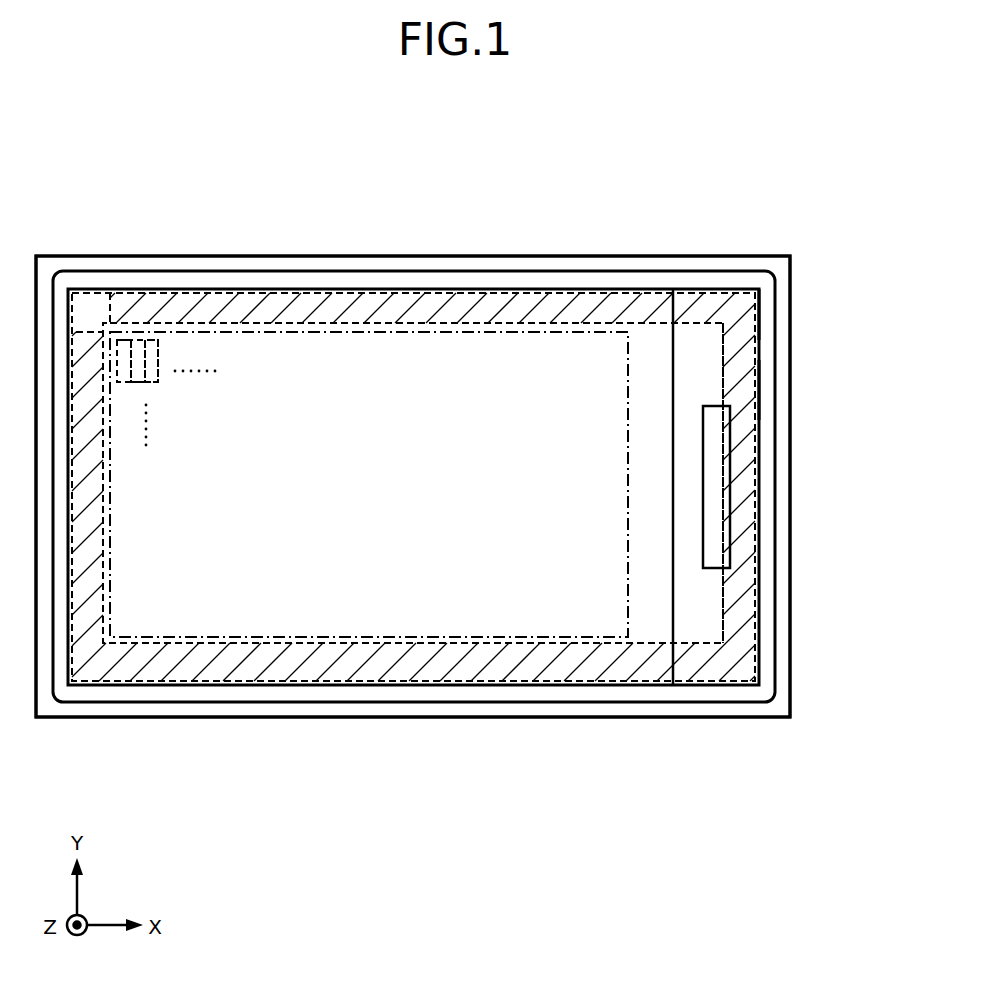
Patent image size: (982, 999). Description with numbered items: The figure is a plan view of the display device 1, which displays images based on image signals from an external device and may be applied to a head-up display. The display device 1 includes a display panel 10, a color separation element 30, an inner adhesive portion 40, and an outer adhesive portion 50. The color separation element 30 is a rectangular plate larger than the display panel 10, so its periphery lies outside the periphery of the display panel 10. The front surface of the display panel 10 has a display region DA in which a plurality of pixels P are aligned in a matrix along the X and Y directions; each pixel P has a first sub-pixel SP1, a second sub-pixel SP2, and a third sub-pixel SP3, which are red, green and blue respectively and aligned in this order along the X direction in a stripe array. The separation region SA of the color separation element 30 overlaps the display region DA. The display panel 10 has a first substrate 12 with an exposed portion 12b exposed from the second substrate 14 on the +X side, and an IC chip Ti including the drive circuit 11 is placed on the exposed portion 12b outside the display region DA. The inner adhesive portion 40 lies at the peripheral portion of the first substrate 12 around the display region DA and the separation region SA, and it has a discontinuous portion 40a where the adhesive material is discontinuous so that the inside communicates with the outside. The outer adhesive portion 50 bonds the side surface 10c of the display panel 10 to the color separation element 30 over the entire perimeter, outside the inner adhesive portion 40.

The display device 1 is at (622, 153).
The display panel 10 is at (507, 281).
The side surface of the display panel 10c is at (760, 385).
The drive circuit 11 is at (806, 487).
The IC chip Ti is at (732, 490).
The first substrate 12 is at (774, 303).
The exposed portion 12b is at (707, 350).
The second substrate 14 is at (674, 350).
The color separation element 30 is at (327, 718).
The inner adhesive portion 40 is at (247, 682).
The discontinuous portion 40a is at (92, 291).
The outer adhesive portion 50 is at (167, 704).
The pixel P is at (258, 199).
The first sub-pixel SP1 is at (120, 338).
The second sub-pixel SP2 is at (134, 340).
The third sub-pixel SP3 is at (148, 340).
The display region DA is at (369, 419).
The separation region SA is at (358, 331).